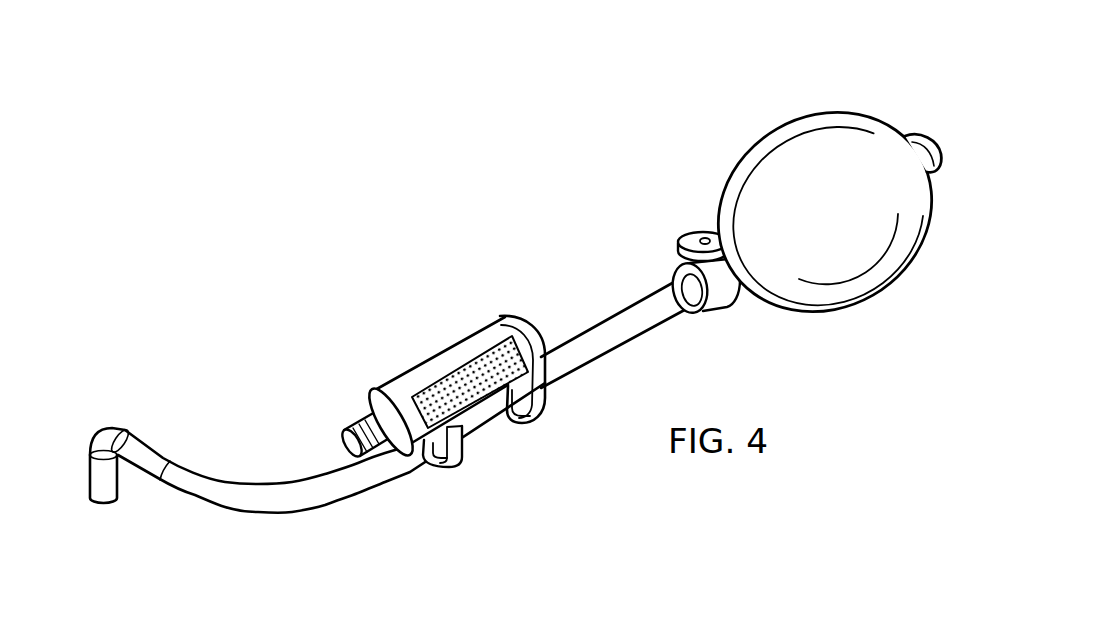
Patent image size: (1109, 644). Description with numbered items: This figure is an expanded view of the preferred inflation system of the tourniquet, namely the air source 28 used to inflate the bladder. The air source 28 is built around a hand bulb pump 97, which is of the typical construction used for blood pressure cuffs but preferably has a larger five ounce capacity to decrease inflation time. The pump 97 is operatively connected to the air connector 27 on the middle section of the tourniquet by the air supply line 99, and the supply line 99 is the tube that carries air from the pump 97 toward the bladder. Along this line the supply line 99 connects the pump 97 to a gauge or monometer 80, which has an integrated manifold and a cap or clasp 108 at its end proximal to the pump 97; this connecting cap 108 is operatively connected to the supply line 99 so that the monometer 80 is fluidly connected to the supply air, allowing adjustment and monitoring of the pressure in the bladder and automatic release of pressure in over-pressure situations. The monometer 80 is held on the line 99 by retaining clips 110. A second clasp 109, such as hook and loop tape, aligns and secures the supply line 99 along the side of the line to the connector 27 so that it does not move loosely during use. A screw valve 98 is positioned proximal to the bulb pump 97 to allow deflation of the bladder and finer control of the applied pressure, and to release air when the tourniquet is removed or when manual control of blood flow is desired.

The air connector 27 is at (90, 528).
The air source 28 is at (514, 325).
The monometer 80 is at (420, 376).
The hand bulb pump 97 is at (790, 117).
The screw valve 98 is at (689, 240).
The air supply line 99 is at (205, 474).
The connecting cap 108 is at (342, 409).
The second clasp 109 is at (484, 353).
The retaining clips 110 is at (452, 466).